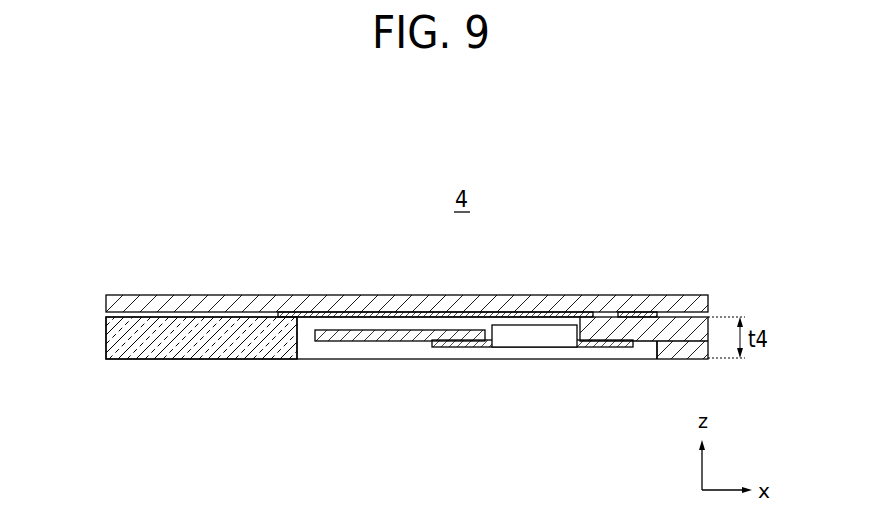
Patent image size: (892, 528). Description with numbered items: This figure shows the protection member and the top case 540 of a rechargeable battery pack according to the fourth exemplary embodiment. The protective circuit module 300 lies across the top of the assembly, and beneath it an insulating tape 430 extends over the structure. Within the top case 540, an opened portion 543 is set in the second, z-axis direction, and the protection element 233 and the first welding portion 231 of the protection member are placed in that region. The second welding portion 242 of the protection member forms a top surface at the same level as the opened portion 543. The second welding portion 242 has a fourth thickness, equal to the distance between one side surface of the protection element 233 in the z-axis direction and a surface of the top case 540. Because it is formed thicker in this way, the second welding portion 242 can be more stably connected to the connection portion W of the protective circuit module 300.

The protective circuit module 300 is at (201, 303).
The insulating tape 430 is at (372, 313).
The connection portion W is at (632, 313).
The protection element 233 is at (543, 337).
The second welding portion 242 is at (680, 323).
The first welding portion 231 is at (340, 336).
The opened portion 543 is at (408, 348).
The top case 540 is at (181, 364).